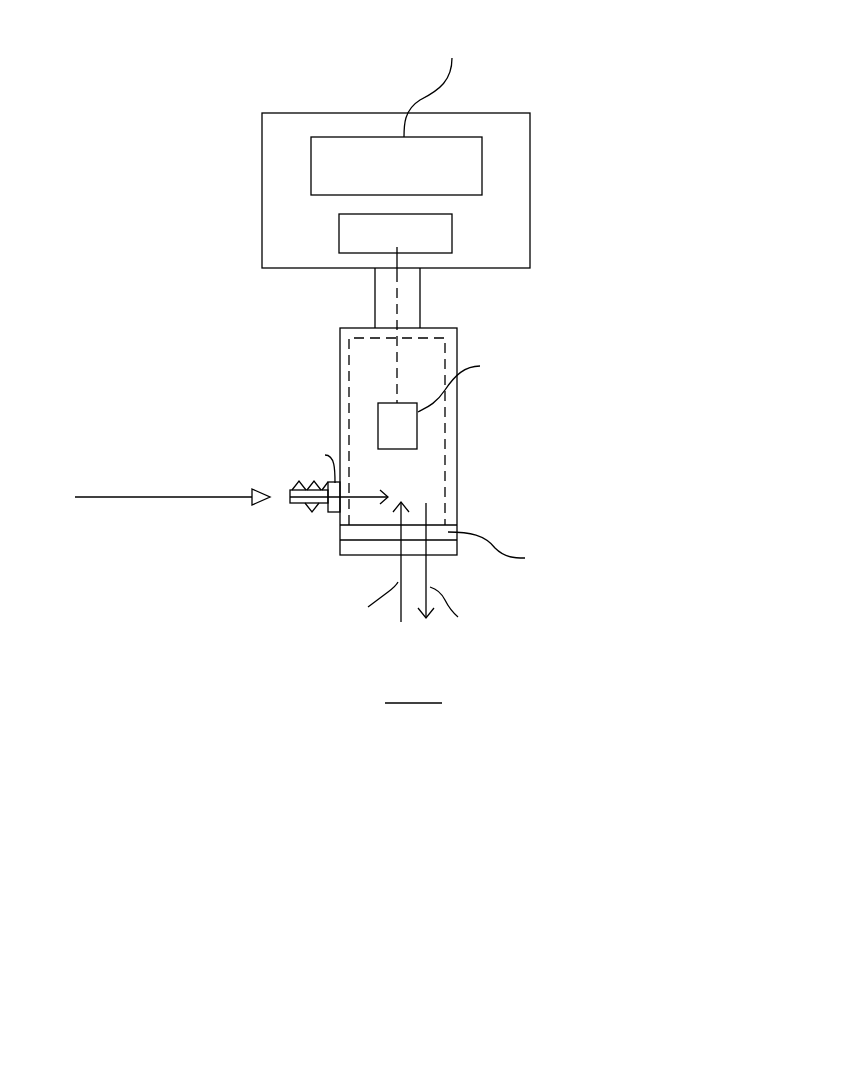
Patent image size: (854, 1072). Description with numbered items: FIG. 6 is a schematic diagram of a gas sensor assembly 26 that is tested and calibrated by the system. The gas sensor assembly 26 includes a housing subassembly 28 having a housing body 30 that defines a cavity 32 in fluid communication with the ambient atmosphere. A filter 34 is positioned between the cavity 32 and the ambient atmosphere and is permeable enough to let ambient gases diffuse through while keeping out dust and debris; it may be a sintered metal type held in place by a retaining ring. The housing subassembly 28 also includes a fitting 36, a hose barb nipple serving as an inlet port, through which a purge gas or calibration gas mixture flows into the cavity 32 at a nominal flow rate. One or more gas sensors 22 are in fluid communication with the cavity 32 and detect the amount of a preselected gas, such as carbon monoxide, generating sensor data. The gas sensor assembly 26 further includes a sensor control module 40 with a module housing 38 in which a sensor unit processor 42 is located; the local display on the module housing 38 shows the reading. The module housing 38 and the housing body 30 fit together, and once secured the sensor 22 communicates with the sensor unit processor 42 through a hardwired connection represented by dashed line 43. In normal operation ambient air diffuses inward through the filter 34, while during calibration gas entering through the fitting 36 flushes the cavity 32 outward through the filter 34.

The gas sensor 22 is at (410, 423).
The gas sensor assembly 26 is at (567, 235).
The housing subassembly 28 is at (318, 338).
The housing body 30 is at (340, 408).
The cavity 32 is at (428, 462).
The filter 34 is at (437, 533).
The fitting 36 is at (317, 503).
The module housing 38 is at (497, 112).
The sensor control module 40 is at (255, 170).
The sensor unit processor 42 is at (453, 231).
The dashed line 43 is at (398, 293).